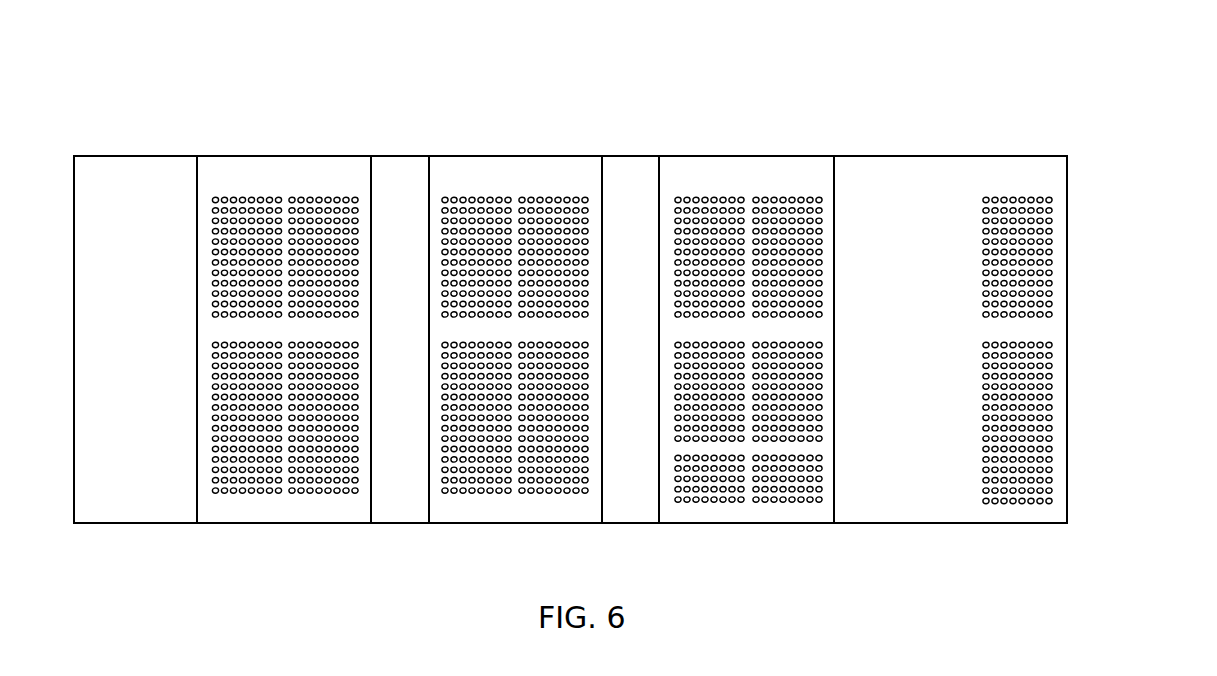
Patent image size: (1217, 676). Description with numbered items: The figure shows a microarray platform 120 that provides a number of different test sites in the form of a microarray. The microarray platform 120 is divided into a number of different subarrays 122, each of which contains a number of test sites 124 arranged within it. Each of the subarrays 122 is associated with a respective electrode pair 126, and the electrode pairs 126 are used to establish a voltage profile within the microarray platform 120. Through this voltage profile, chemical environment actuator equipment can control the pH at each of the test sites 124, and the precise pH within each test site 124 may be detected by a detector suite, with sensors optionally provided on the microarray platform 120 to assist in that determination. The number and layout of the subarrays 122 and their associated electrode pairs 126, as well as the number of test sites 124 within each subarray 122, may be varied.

The microarray platform 120 is at (927, 58).
The subarray 122 is at (641, 353).
The test site 124 is at (215, 200).
The electrode pair 126 is at (372, 177).